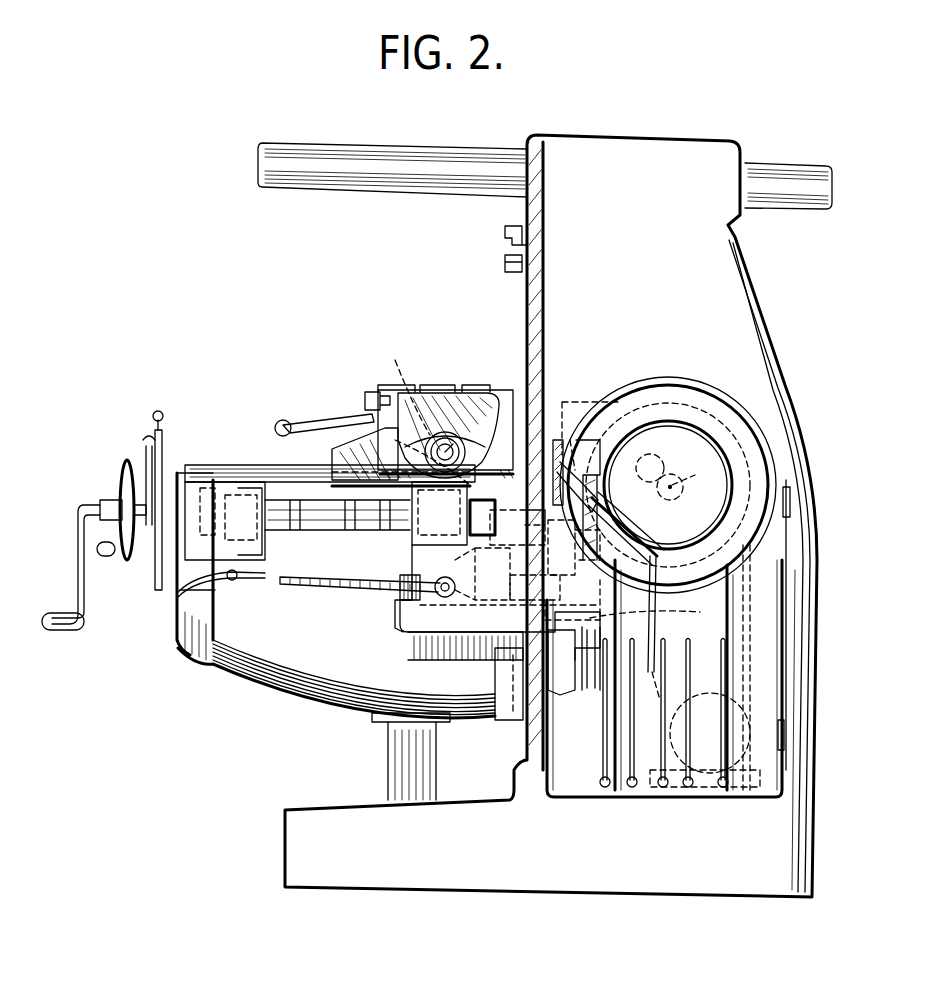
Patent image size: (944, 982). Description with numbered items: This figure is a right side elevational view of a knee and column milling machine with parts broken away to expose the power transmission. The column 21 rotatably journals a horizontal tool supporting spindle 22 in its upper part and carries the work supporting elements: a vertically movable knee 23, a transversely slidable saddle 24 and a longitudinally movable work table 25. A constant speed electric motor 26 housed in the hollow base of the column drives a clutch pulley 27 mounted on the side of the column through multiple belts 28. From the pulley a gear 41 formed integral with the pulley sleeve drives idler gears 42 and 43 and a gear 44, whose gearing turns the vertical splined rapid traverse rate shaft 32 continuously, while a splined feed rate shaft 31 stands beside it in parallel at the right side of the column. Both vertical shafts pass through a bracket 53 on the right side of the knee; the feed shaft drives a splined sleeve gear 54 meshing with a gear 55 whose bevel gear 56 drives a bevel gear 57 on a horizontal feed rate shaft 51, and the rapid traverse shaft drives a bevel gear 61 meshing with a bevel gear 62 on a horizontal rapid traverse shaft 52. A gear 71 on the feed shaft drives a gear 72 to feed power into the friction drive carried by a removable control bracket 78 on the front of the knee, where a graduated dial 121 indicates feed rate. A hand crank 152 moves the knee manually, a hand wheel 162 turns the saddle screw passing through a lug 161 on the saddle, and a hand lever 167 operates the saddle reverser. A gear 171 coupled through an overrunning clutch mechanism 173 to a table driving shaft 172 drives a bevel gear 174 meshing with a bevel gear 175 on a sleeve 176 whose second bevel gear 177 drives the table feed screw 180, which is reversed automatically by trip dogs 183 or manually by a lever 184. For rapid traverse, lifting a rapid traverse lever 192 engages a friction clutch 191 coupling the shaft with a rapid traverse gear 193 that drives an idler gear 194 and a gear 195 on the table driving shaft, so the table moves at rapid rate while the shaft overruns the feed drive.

The column 21 is at (597, 165).
The tool supporting spindle 22 is at (505, 236).
The knee 23 is at (292, 700).
The saddle 24 is at (330, 462).
The work table 25 is at (438, 385).
The electric motor 26 is at (730, 788).
The clutch pulley 27 is at (682, 492).
The multiple belts 28 is at (812, 500).
The splined feed rate shaft 31 is at (645, 530).
The splined rapid traverse rate shaft 32 is at (610, 498).
The gear 41 is at (693, 475).
The idler gear 42 is at (655, 458).
The idler gear 43 is at (668, 485).
The gear 44 is at (630, 385).
The horizontal feed rate shaft 51 is at (450, 660).
The horizontal rapid traverse shaft 52 is at (400, 580).
The bracket 53 is at (476, 660).
The splined sleeve gear 54 is at (662, 548).
The gear 55 is at (635, 606).
The bevel gear 56 is at (653, 615).
The bevel gear 57 is at (593, 663).
The bevel gear 61 is at (630, 515).
The bevel gear 62 is at (562, 665).
The gear 71 is at (435, 592).
The gear 72 is at (398, 626).
The control bracket 78 is at (190, 614).
The graduated dial 121 is at (165, 430).
The hand crank 152 is at (62, 632).
The lug 161 is at (405, 640).
The hand wheel 162 is at (126, 468).
The hand lever 167 is at (147, 436).
The gear 171 is at (200, 482).
The table driving shaft 172 is at (300, 500).
The overrunning clutch mechanism 173 is at (256, 580).
The bevel gear 174 is at (410, 520).
The bevel gear 175 is at (401, 463).
The sleeve 176 is at (365, 454).
The bevel gear 177 is at (422, 408).
The table feed screw 180 is at (455, 445).
The trip dogs 183 is at (368, 395).
The lever 184 is at (283, 420).
The rapid traverse friction clutch 191 is at (482, 574).
The rapid traverse lever 192 is at (340, 590).
The rapid traverse gear 193 is at (555, 597).
The idler gear 194 is at (570, 547).
The gear 195 is at (512, 529).